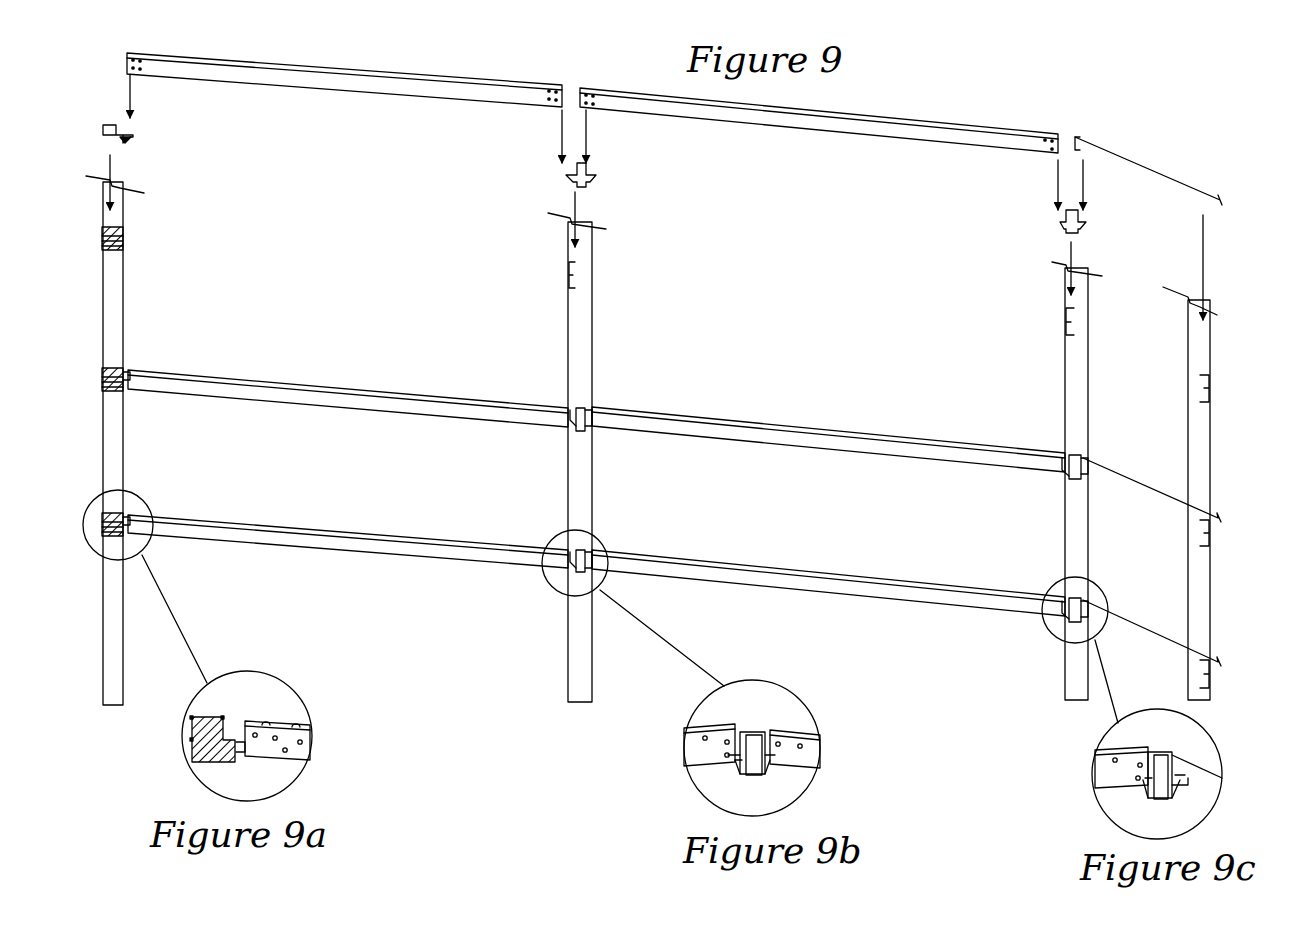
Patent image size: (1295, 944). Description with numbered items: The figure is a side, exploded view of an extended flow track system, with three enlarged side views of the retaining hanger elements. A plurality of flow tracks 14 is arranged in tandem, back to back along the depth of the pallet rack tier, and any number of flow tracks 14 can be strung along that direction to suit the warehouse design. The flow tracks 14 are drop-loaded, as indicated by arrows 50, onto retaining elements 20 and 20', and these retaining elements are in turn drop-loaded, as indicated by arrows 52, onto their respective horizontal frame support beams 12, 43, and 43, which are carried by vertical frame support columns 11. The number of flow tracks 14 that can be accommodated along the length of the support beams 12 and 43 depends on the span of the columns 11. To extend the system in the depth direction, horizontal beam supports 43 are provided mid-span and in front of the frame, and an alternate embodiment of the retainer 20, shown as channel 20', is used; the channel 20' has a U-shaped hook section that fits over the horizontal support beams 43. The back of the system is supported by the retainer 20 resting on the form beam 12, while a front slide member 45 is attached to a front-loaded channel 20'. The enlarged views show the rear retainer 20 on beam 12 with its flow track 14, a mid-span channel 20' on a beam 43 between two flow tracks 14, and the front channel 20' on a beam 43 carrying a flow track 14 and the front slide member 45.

In FIG. 9, the vertical frame support column 11 is at (113, 300).
In FIG. 9, the frame support beam 12 is at (123, 222).
In FIG. 9A, the frame support beam 12 is at (220, 760).
In FIG. 9, the flow track 14 is at (445, 75).
In FIG. 9A, the flow track 14 is at (283, 719).
In FIG. 9B, the flow track 14 is at (715, 725).
In FIG. 9C, the flow track 14 is at (1110, 748).
In FIG. 9, the retaining element 20 is at (116, 305).
In FIG. 9A, the retaining element 20 is at (226, 719).
In FIG. 9, the channel 20' is at (858, 385).
In FIG. 9B, the channel 20' is at (750, 730).
In FIG. 9C, the channel 20' is at (1150, 756).
In FIG. 9, the horizontal support beam 43 is at (568, 278).
In FIG. 9B, the horizontal support beam 43 is at (748, 776).
In FIG. 9C, the horizontal support beam 43 is at (1158, 795).
In FIG. 9, the front slide member 45 is at (1143, 165).
In FIG. 9C, the front slide member 45 is at (1205, 765).
In FIG. 9, the drop-loading arrows for flow tracks 50 is at (130, 100).
In FIG. 9, the drop-loading arrows for retaining elements 52 is at (110, 168).